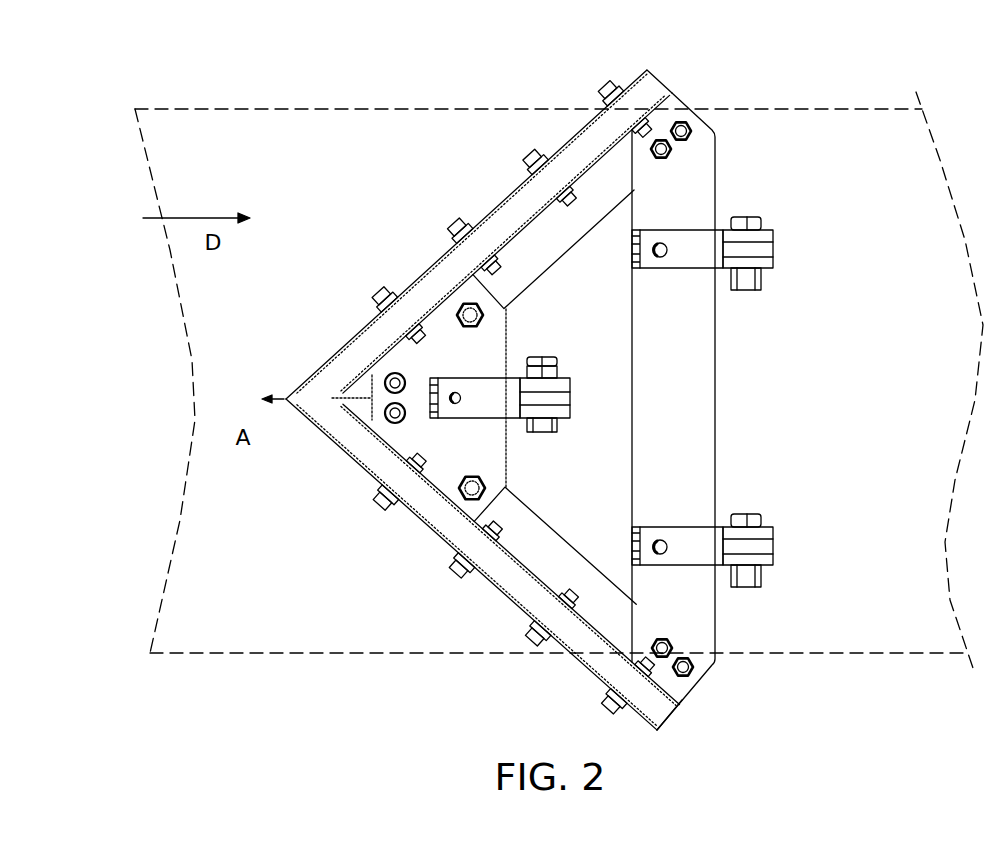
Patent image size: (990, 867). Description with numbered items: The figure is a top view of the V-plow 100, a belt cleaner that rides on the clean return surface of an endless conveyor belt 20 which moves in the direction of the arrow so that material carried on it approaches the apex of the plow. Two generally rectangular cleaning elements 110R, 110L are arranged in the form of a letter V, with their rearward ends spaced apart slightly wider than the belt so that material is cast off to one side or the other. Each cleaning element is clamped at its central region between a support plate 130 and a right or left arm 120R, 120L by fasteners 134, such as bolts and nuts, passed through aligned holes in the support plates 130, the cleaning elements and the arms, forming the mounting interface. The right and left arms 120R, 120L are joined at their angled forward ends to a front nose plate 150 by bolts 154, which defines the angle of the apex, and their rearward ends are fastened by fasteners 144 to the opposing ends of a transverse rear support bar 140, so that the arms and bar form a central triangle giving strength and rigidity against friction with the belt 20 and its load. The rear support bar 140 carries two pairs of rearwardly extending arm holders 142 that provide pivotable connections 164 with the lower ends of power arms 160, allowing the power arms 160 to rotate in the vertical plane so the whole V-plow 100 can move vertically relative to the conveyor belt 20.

The conveyor belt 20 is at (828, 405).
The V-plow 100 is at (329, 134).
The right cleaning element 110R is at (650, 92).
The left cleaning element 110L is at (550, 603).
The right arm 120R is at (550, 248).
The left arm 120L is at (555, 562).
The support plate 130 is at (578, 128).
The fastener 134 is at (447, 240).
The rear support bar 140 is at (692, 192).
The arm holder 142 is at (772, 265).
The fastener 144 is at (692, 130).
The front nose plate 150 is at (482, 348).
The bolt 154 is at (378, 446).
The power arm 160 is at (768, 250).
The pivotable connection 164 is at (750, 218).